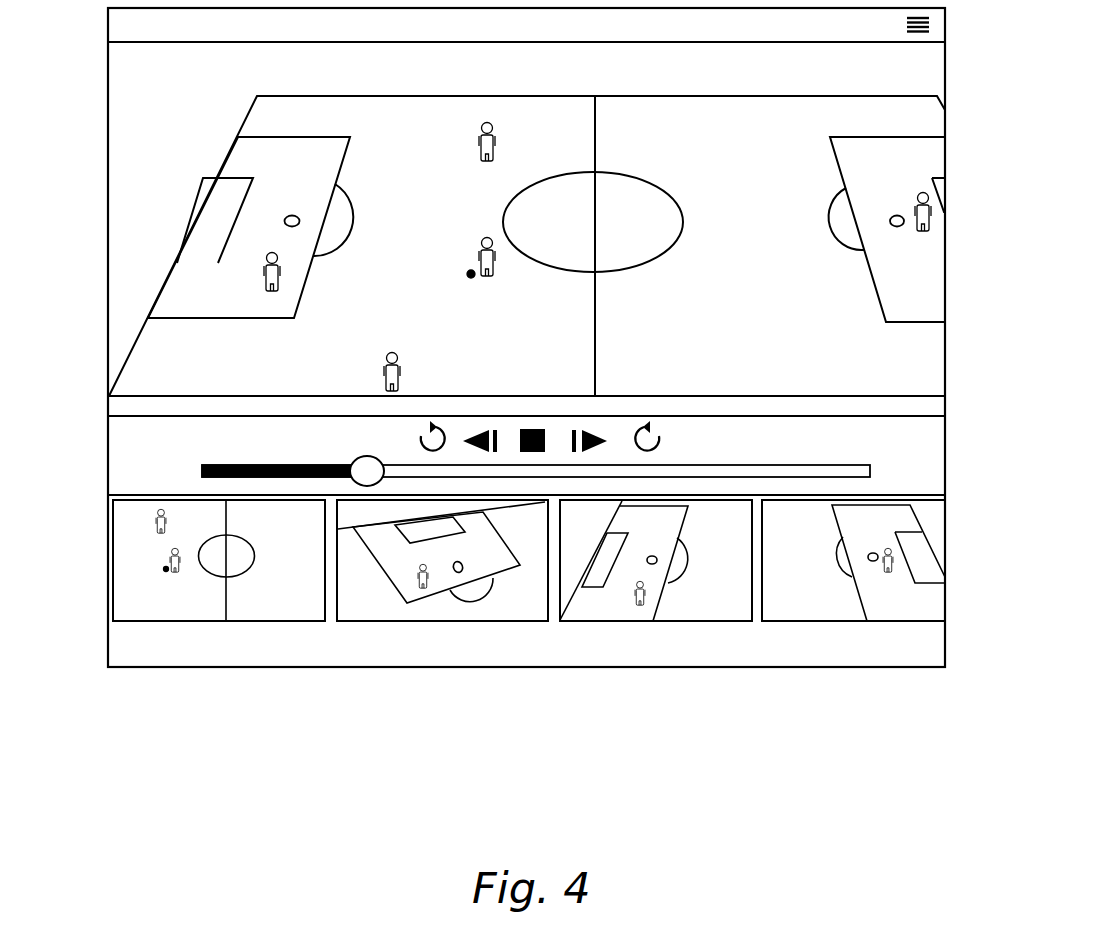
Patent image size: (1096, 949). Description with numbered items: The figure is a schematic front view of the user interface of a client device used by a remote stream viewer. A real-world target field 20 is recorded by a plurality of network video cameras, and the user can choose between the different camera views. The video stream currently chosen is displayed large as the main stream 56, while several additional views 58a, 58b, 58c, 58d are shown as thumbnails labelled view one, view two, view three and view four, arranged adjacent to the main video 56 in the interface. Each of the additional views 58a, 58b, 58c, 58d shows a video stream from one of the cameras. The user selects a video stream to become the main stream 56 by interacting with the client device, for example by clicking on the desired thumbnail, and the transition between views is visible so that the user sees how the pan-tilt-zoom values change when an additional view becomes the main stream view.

The main stream 56 is at (130, 122).
The real-world target field 20 is at (151, 381).
The additional view 58a is at (290, 605).
The additional view 58b is at (508, 606).
The additional view 58c is at (722, 605).
The additional view 58d is at (785, 605).